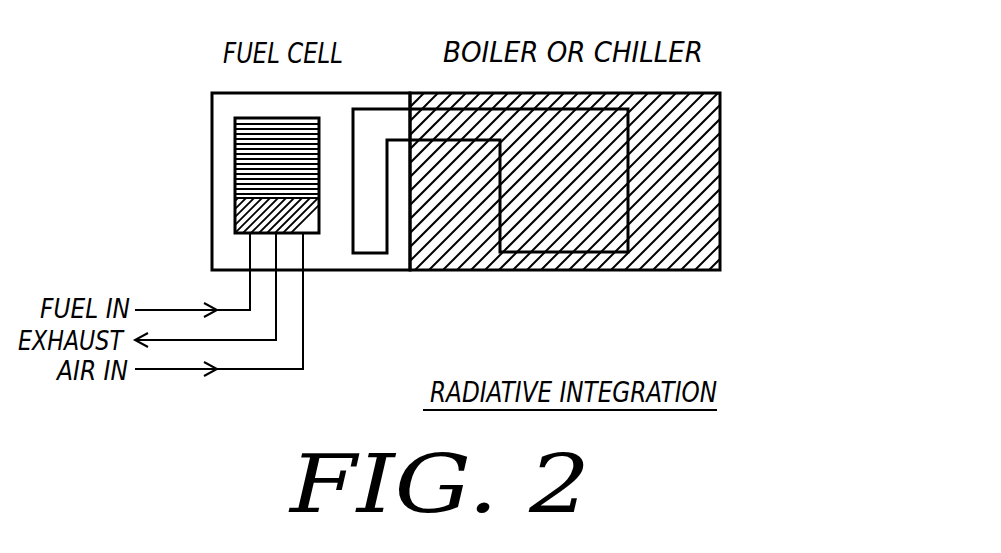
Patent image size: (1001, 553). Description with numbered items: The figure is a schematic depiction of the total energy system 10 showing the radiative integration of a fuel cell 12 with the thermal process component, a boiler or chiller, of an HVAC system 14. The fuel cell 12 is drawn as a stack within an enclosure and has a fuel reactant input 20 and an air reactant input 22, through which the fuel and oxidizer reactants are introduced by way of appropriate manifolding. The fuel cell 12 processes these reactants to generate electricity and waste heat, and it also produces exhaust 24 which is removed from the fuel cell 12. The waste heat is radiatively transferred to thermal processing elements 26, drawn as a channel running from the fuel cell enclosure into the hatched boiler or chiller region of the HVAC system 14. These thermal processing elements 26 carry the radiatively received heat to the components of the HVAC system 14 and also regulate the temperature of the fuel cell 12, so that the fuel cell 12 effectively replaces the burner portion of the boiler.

The total energy system 10 is at (733, 62).
The fuel cell 12 is at (212, 120).
The HVAC system 14 is at (623, 270).
The fuel reactant input 20 is at (177, 310).
The air reactant input 22 is at (253, 370).
The exhaust 24 is at (277, 313).
The thermal processing elements 26 is at (390, 242).